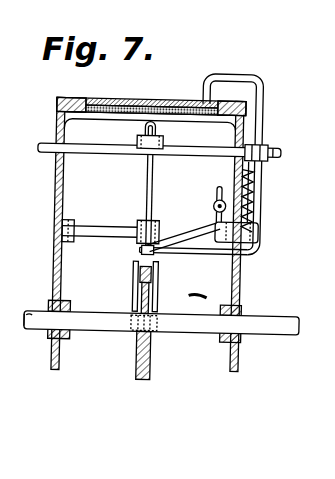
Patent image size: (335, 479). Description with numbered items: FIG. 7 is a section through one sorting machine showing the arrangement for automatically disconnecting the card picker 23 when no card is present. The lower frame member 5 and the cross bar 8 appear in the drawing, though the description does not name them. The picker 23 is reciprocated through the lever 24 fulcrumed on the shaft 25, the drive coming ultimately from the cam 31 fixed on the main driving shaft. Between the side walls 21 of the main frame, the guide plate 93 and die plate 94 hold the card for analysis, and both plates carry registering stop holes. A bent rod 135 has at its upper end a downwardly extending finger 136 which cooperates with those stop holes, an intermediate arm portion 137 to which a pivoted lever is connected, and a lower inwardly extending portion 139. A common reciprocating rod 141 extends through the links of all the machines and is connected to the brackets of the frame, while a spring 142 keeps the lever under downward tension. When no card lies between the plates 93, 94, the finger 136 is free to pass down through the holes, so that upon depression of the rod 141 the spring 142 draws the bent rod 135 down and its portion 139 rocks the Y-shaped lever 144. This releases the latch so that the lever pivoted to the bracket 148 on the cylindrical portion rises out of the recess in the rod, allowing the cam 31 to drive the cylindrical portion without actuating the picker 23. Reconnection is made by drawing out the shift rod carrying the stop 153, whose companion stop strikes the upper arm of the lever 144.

The frame rail end 5 is at (26, 331).
The cross bar 8 is at (112, 322).
The side walls 21 is at (54, 262).
The card picker 23 is at (133, 122).
The lever 24 is at (152, 172).
The shaft 25 is at (108, 228).
The cam 31 is at (152, 372).
The guide plate 93 is at (82, 100).
The die plate 94 is at (70, 120).
The bent rod 135 is at (268, 183).
The finger 136 is at (201, 101).
The arm portion 137 is at (256, 208).
The inwardly extending portion 139 is at (198, 253).
The reciprocating rod 141 is at (46, 148).
The spring 142 is at (246, 212).
The Y-shaped lever 144 is at (201, 230).
The bracket 148 is at (135, 298).
The stop 153 is at (214, 201).